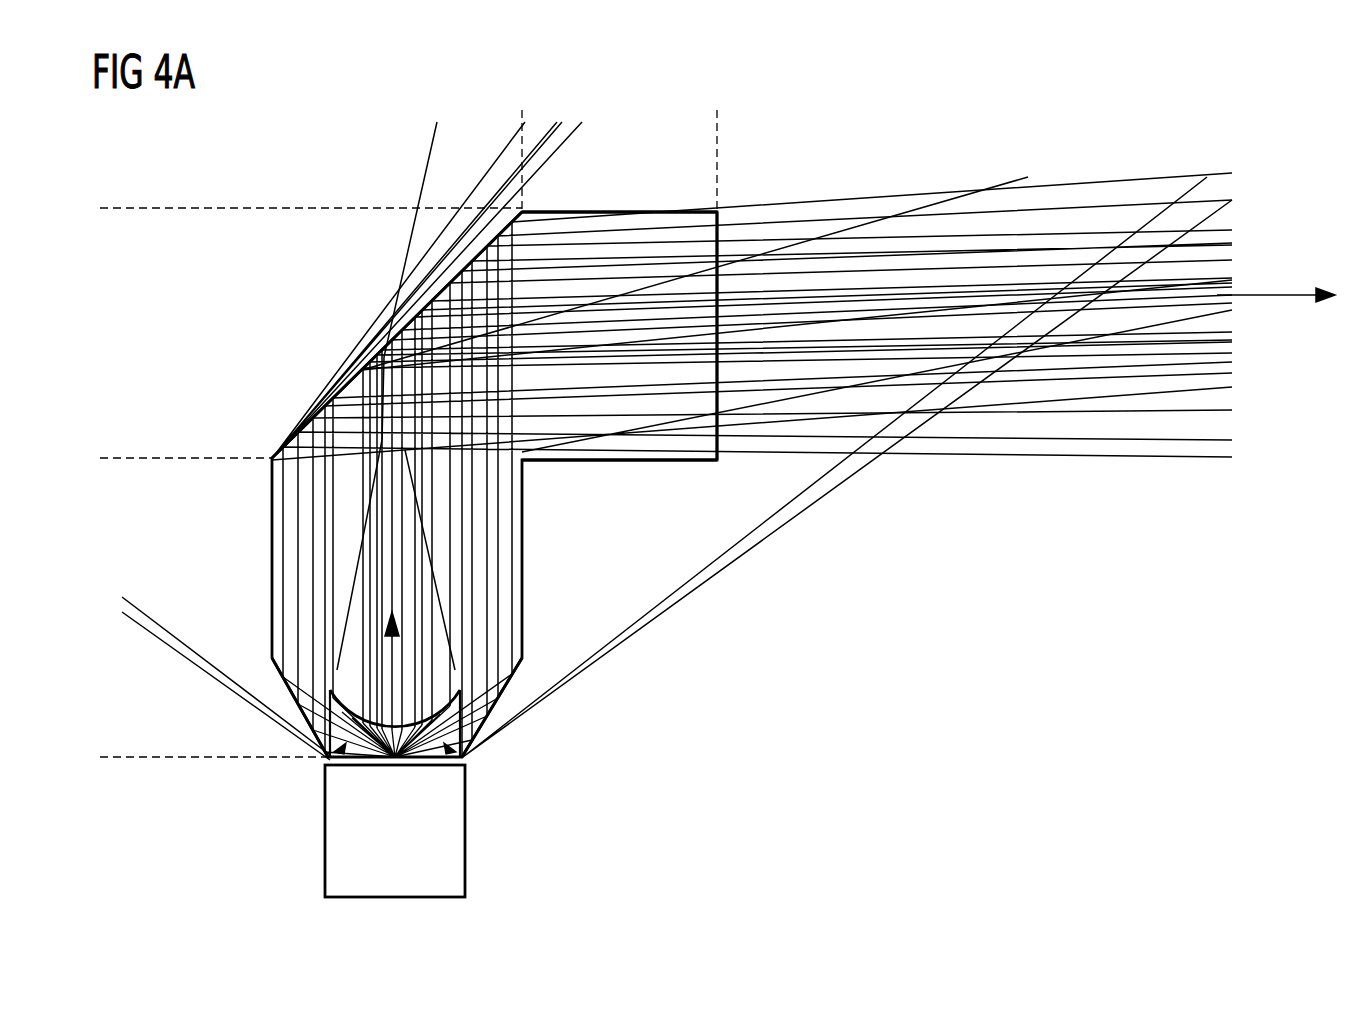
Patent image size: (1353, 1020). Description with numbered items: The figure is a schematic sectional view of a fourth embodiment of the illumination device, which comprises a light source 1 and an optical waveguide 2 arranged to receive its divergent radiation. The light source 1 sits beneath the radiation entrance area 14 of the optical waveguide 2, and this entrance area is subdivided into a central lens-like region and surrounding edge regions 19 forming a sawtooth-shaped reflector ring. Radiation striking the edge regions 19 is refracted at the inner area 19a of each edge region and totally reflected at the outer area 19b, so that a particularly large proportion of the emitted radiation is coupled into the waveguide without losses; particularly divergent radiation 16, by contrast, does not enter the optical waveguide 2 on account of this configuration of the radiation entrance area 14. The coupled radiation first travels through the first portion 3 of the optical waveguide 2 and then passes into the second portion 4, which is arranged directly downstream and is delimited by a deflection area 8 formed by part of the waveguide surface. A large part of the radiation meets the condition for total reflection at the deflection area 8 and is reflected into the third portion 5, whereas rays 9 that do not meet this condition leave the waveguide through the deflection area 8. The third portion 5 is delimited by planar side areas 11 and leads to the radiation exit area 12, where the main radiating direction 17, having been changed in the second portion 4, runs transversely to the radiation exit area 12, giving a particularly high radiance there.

The light source 1 is at (468, 832).
The optical waveguide 2 is at (520, 488).
The first portion 3 is at (108, 460).
The second portion 4 is at (108, 208).
The third portion 5 is at (717, 101).
The deflection area 8 is at (348, 368).
The rays 9 is at (428, 170).
The planar side areas 11 is at (590, 462).
The radiation exit area 12 is at (718, 240).
The radiation entrance area 14 is at (482, 762).
The divergent radiation 16 is at (163, 640).
The main radiating direction 17 is at (385, 648).
The edge regions 19 is at (330, 716).
The inner area 19a is at (433, 765).
The outer area 19b is at (288, 684).